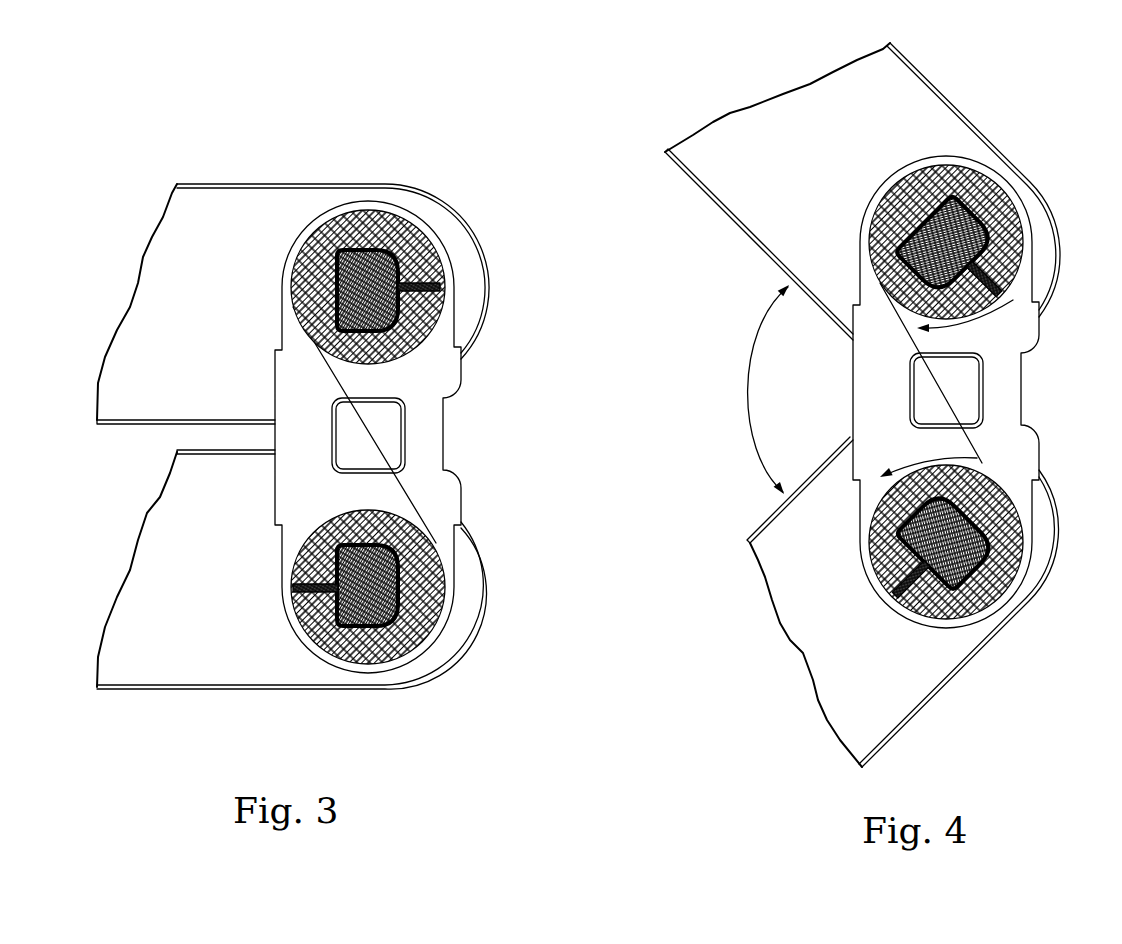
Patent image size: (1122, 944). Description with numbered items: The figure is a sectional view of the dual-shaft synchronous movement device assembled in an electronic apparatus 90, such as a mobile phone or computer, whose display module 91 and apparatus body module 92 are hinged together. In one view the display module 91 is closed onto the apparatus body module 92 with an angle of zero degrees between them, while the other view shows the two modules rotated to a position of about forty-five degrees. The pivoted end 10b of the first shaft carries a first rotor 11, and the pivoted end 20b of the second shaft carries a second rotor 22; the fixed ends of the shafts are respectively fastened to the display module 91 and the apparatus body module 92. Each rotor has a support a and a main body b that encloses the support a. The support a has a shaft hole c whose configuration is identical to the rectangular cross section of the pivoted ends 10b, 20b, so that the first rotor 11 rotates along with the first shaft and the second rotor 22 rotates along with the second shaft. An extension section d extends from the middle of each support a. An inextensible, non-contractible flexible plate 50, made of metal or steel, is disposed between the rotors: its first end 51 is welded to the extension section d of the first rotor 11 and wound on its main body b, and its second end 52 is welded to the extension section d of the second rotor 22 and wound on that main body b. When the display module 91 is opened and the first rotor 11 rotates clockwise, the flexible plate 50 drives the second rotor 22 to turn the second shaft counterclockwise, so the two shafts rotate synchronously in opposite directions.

In FIG. 3, the electronic apparatus 90 is at (221, 160).
In FIG. 4, the electronic apparatus 90 is at (974, 98).
In FIG. 3, the display module 91 is at (168, 287).
In FIG. 4, the display module 91 is at (743, 140).
In FIG. 3, the apparatus body module 92 is at (168, 667).
In FIG. 4, the apparatus body module 92 is at (882, 712).
In FIG. 3, the first rotor 11 is at (299, 236).
In FIG. 4, the first rotor 11 is at (876, 191).
In FIG. 3, the second rotor 22 is at (318, 660).
In FIG. 4, the second rotor 22 is at (947, 630).
In FIG. 3, the pivoted end 10b is at (362, 245).
In FIG. 4, the pivoted end 10b is at (963, 227).
In FIG. 3, the pivoted end 20b is at (368, 613).
In FIG. 4, the pivoted end 20b is at (985, 557).
In FIG. 3, the inextensible/non-contractible flexible plate 50 is at (390, 440).
In FIG. 4, the inextensible/non-contractible flexible plate 50 is at (955, 395).
In FIG. 3, the first end 51 is at (440, 288).
In FIG. 4, the first end 51 is at (985, 296).
In FIG. 3, the second end 52 is at (315, 587).
In FIG. 4, the second end 52 is at (915, 577).
In FIG. 3, the support a is at (340, 307).
In FIG. 4, the support a is at (903, 238).
In FIG. 3, the main body b is at (408, 228).
In FIG. 4, the main body b is at (1007, 218).
In FIG. 3, the shaft hole c is at (360, 340).
In FIG. 4, the shaft hole c is at (907, 277).
In FIG. 3, the extension section d is at (430, 268).
In FIG. 4, the extension section d is at (990, 273).